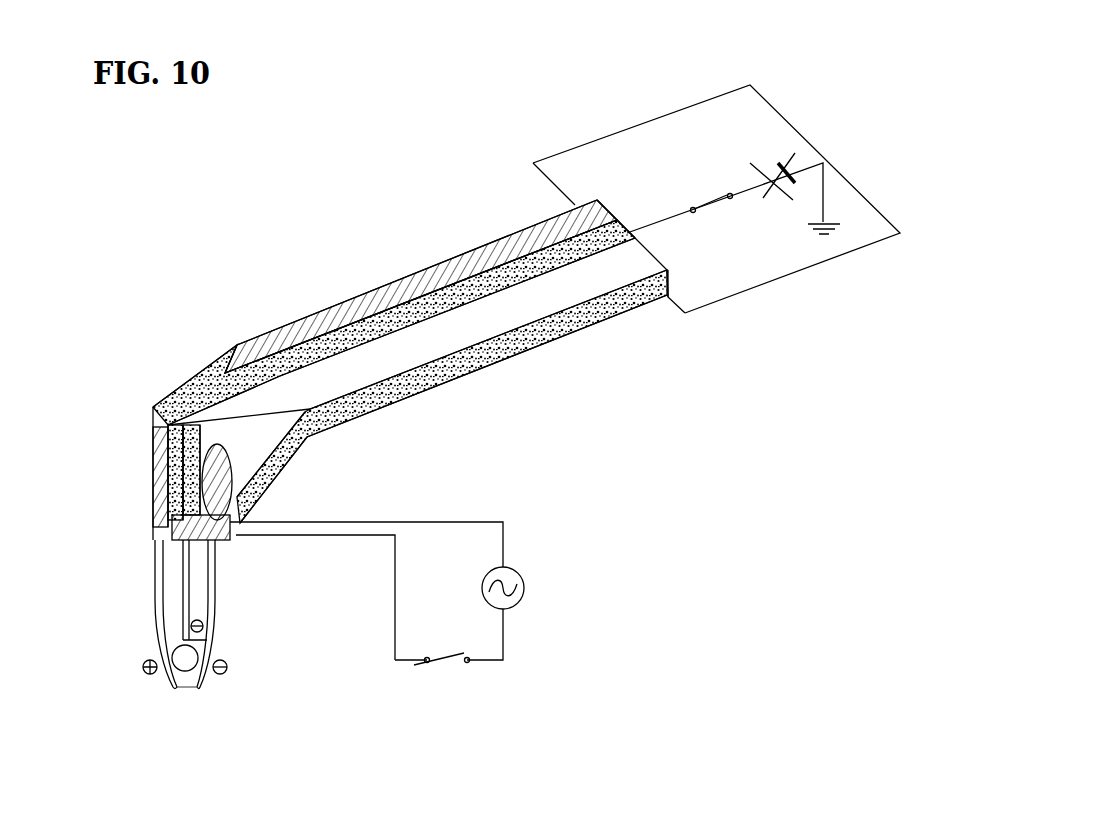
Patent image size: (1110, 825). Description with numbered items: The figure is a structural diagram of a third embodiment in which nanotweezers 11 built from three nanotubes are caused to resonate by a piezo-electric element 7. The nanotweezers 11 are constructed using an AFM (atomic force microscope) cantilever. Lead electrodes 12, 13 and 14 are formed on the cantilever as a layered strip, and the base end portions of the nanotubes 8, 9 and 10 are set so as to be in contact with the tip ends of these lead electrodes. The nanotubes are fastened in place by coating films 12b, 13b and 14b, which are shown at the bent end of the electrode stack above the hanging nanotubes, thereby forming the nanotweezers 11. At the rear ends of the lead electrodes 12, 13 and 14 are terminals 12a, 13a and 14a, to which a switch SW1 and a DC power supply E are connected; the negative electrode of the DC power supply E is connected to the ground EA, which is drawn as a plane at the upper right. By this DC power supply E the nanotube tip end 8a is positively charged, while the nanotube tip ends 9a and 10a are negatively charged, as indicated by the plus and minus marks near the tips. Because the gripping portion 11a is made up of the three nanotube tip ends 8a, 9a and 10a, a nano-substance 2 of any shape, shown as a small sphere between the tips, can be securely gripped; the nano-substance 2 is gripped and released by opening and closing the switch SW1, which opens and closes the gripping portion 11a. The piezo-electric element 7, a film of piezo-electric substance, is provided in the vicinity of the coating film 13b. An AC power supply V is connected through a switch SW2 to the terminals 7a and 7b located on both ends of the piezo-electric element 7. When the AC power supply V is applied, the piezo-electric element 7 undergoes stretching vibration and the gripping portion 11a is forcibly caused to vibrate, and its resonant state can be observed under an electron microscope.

The nanotweezers 11 is at (397, 354).
The lead electrode 14 is at (423, 273).
The terminal 14a is at (553, 222).
The coating film 14b is at (183, 413).
The lead electrode 12 is at (473, 300).
The terminal 12a is at (626, 232).
The coating film 12b is at (153, 457).
The lead electrode 13 is at (573, 323).
The terminal 13a is at (672, 280).
The coating film 13b is at (222, 445).
The piezo-electric element 7 is at (258, 503).
The terminal 7a is at (152, 540).
The terminal 7b is at (287, 518).
The nanotube 8 is at (150, 591).
The nanotube tip end 8a is at (168, 681).
The nanotube 9 is at (215, 597).
The nanotube tip end 9a is at (200, 684).
The nanotube 10 is at (190, 578).
The nanotube tip end 10a is at (212, 631).
The nano-substance 2 is at (184, 663).
The gripping portion 11a is at (200, 697).
The switch SW1 is at (713, 197).
The switch SW2 is at (443, 664).
The DC power supply E is at (786, 166).
The ground EA is at (827, 222).
The AC power supply V is at (524, 588).